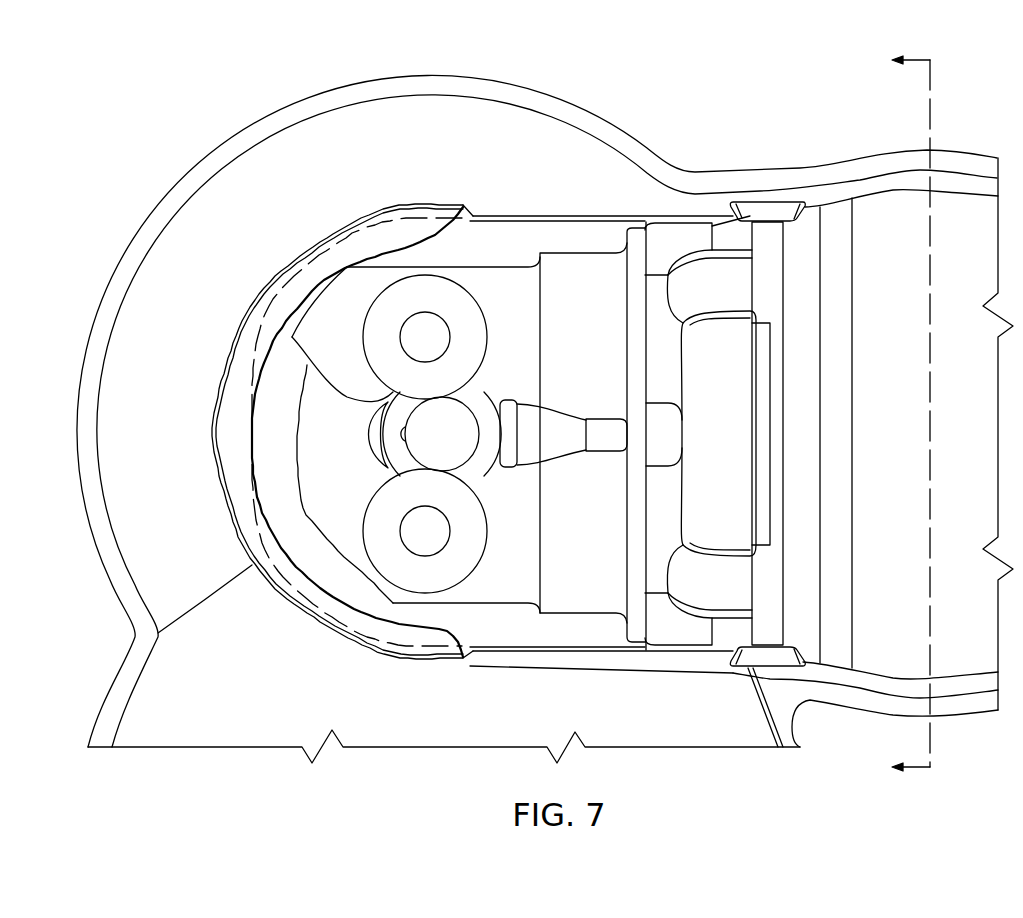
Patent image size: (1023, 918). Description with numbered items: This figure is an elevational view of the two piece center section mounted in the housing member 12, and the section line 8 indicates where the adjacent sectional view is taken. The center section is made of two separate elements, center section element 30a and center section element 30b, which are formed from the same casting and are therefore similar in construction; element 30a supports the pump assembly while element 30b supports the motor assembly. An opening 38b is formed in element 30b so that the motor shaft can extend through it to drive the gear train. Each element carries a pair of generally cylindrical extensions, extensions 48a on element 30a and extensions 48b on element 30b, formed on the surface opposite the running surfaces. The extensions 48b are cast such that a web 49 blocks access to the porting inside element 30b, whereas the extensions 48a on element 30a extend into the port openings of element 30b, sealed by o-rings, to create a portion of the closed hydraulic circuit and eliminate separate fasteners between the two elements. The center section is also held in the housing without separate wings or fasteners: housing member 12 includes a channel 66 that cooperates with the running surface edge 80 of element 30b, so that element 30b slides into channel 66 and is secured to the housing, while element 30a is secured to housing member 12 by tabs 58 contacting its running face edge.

The housing member 12 is at (430, 152).
The running surface edge 80 is at (338, 243).
The channel 66 is at (232, 398).
The web 49 is at (427, 337).
The opening 38b is at (461, 447).
The center section element 30b is at (600, 510).
The generally cylindrical extensions 48b is at (482, 308).
The generally cylindrical extensions 48a is at (662, 348).
The center section element 30a is at (737, 421).
The tabs 58 is at (768, 207).
The section line 8- 8 is at (900, 415).